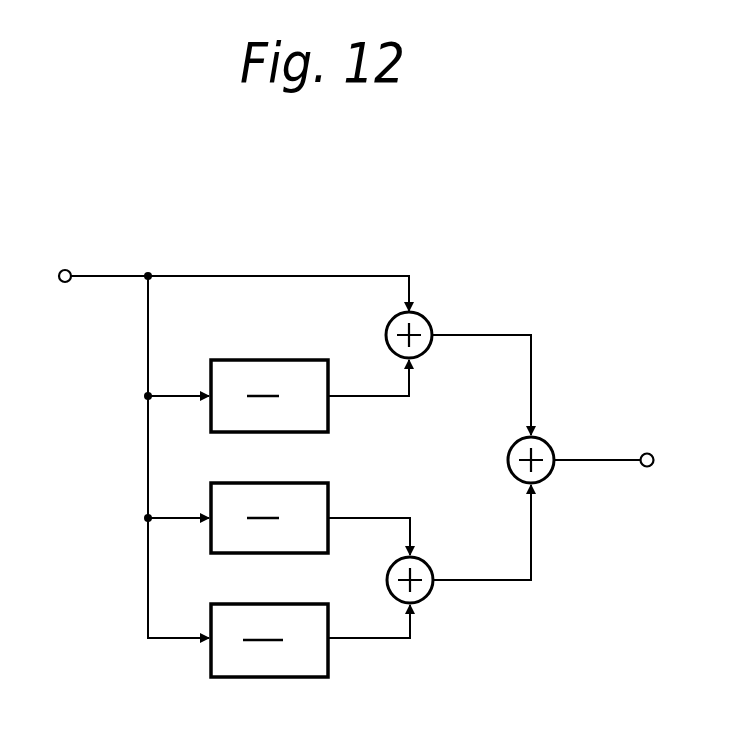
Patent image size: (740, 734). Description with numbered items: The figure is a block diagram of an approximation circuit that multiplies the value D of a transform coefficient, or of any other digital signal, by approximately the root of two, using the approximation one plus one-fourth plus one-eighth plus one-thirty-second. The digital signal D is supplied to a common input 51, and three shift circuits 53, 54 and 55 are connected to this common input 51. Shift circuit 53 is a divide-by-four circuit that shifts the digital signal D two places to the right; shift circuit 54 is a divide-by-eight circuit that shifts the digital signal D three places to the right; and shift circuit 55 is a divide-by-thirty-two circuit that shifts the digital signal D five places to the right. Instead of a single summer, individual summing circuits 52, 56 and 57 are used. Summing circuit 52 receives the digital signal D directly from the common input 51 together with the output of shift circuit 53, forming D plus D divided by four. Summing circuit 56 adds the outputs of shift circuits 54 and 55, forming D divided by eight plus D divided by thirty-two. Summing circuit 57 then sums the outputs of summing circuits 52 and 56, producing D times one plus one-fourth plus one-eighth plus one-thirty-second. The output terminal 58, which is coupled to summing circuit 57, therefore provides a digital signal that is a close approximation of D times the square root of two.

The common input 51 is at (65, 270).
The digital signal D is at (112, 276).
The summing circuit 52 is at (427, 318).
The shift circuit 53 is at (262, 358).
The shift circuit 54 is at (329, 506).
The shift circuit 55 is at (330, 627).
The summing circuit 56 is at (427, 568).
The summing circuit 57 is at (544, 445).
The output terminal 58 is at (638, 452).